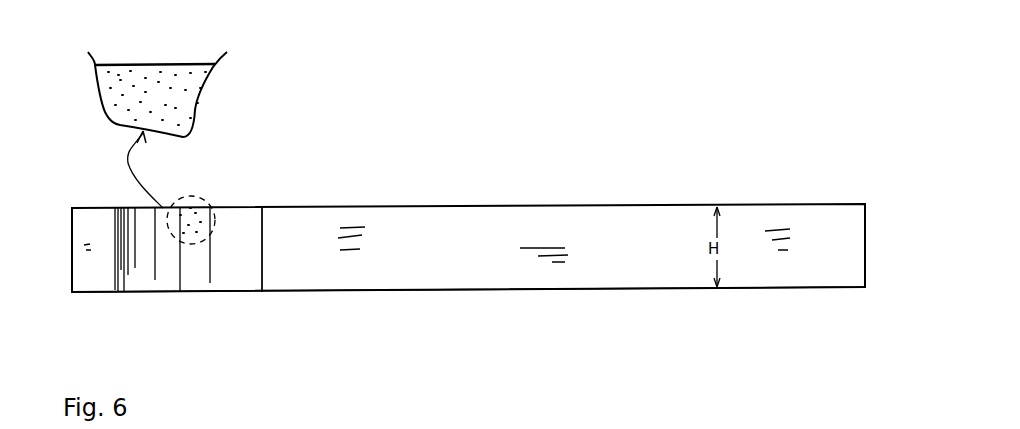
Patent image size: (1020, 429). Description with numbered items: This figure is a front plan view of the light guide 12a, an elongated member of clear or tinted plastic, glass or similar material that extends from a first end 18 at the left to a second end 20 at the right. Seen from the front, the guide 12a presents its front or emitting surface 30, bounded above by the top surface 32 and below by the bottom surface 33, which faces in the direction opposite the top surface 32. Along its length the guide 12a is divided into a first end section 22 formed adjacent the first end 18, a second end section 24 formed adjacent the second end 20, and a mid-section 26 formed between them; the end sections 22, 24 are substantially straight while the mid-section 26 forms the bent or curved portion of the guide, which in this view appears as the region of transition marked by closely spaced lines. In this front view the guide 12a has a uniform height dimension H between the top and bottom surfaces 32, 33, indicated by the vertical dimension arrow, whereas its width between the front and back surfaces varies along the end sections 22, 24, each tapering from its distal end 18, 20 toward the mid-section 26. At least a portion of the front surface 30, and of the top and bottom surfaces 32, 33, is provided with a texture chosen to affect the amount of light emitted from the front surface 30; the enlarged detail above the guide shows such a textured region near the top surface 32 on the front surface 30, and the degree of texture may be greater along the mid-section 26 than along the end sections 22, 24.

The light guide 12a is at (497, 270).
The first end 18 is at (70, 224).
The second end 20 is at (865, 248).
The first end section 22 is at (110, 305).
The second end section 24 is at (856, 195).
The mid-section 26 is at (268, 308).
The front surface 30 is at (162, 95).
The top surface 32 is at (277, 205).
The bottom surface 33 is at (350, 292).